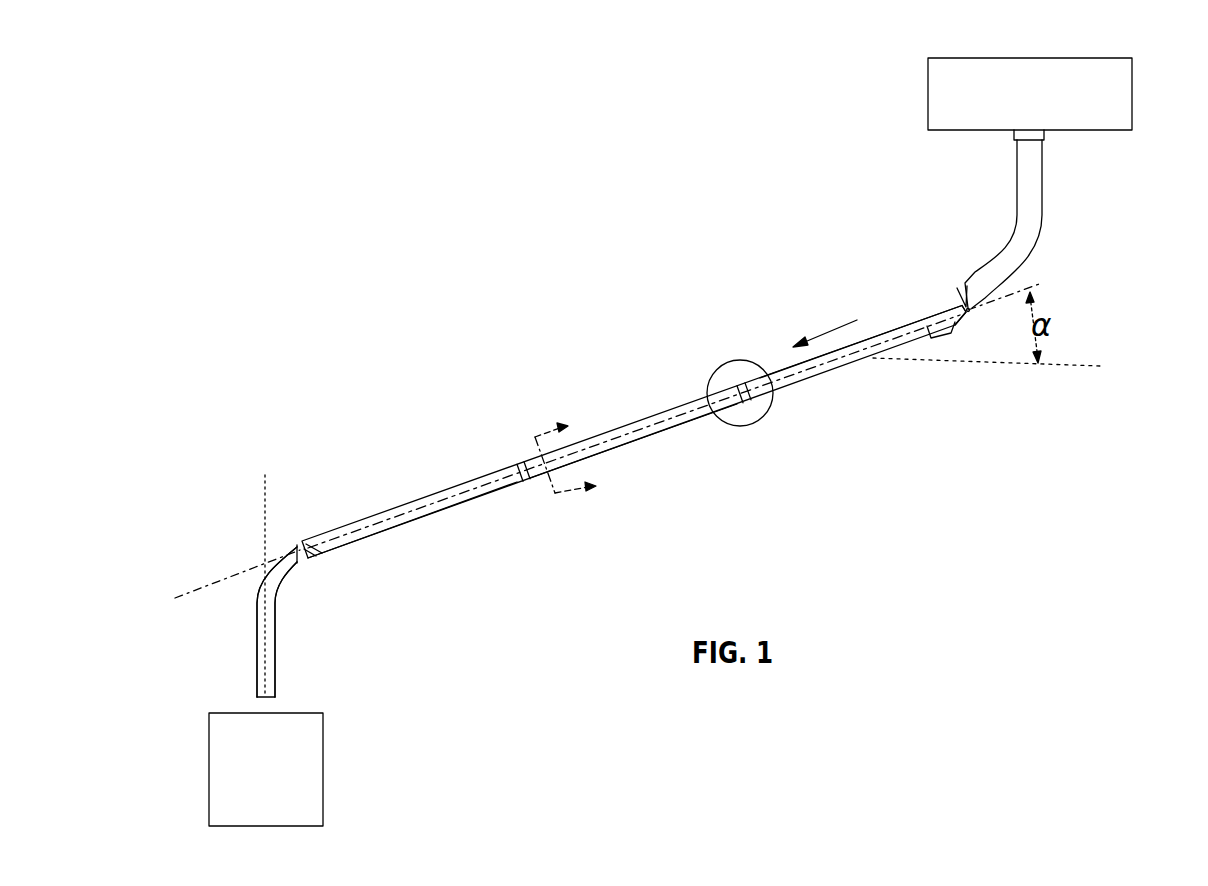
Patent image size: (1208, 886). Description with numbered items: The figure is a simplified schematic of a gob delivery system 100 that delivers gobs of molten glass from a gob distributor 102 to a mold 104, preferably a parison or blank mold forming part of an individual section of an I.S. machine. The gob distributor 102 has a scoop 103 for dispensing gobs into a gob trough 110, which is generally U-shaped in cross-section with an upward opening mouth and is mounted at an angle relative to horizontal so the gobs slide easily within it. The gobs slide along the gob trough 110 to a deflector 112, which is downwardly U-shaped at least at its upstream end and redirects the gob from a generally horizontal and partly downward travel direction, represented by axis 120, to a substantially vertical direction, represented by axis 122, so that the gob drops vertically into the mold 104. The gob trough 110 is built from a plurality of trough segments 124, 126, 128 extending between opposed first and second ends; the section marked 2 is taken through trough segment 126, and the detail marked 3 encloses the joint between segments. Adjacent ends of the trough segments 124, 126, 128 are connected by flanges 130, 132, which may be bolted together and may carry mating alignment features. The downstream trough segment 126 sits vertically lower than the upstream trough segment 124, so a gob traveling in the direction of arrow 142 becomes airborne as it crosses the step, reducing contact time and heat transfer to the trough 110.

The gob delivery system 100 is at (394, 366).
The gob distributor 102 is at (1132, 92).
The mold 104 is at (1043, 175).
The gob trough 110 is at (612, 405).
The deflector 112 is at (263, 572).
The axis 120 is at (230, 580).
The axis 122 is at (268, 505).
The trough segment 124 is at (775, 390).
The trough segment 126 is at (653, 433).
The trough segment 128 is at (417, 523).
The flange 130 is at (520, 483).
The flange 132 is at (528, 482).
The arrow 142 is at (833, 328).
The scoop 103 is at (894, 403).
The detail view 3 indicator 3 is at (727, 362).
The section line 2- 2 is at (576, 453).